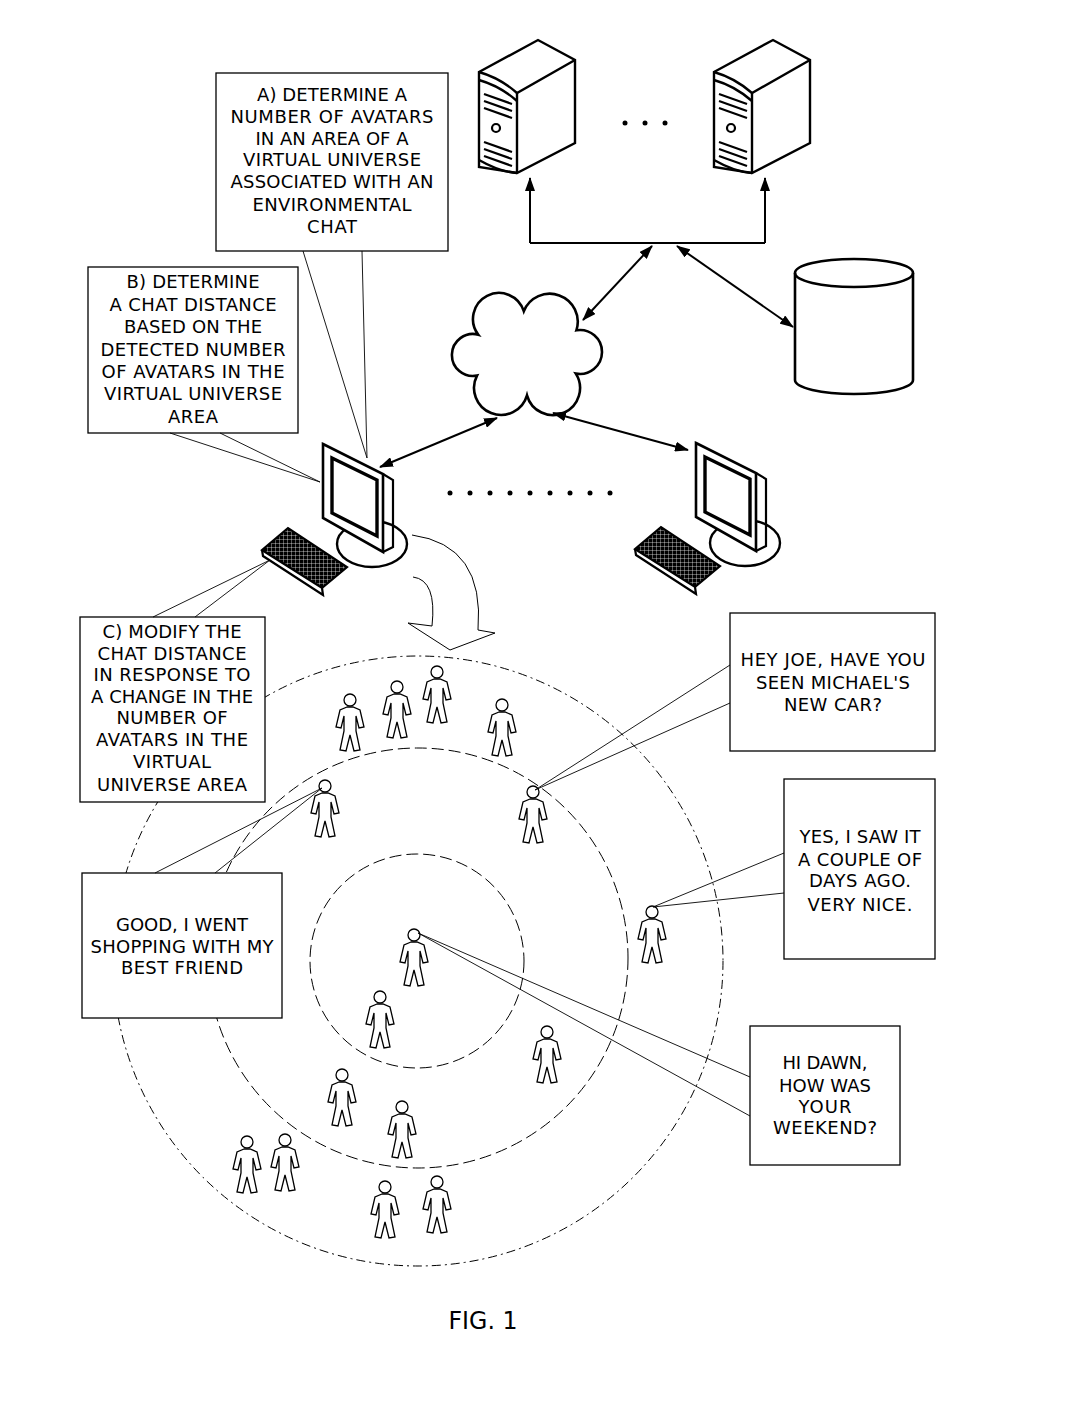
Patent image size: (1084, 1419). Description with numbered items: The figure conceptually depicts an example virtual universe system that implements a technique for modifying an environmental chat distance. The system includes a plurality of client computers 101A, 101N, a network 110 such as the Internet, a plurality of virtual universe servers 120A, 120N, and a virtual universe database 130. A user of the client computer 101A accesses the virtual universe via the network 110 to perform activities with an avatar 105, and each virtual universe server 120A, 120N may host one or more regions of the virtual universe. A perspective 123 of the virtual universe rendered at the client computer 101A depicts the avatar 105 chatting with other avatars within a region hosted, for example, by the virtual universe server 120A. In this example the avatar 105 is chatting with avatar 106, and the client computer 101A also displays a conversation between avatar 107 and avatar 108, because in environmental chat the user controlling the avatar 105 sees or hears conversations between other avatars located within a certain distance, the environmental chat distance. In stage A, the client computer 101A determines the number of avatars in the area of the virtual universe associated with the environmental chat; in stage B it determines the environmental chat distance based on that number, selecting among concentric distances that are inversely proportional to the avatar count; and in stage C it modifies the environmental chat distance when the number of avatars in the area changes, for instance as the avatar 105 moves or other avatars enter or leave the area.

The virtual universe server 120A is at (580, 64).
The virtual universe server 120N is at (806, 64).
The virtual universe database 130 is at (897, 266).
The network 110 is at (478, 412).
The client computer 101A is at (320, 497).
The client computer 101N is at (760, 477).
The perspective 123 is at (506, 664).
The avatar 106 is at (333, 792).
The avatar 108 is at (524, 794).
The avatar 105 is at (412, 928).
The avatar 107 is at (667, 942).